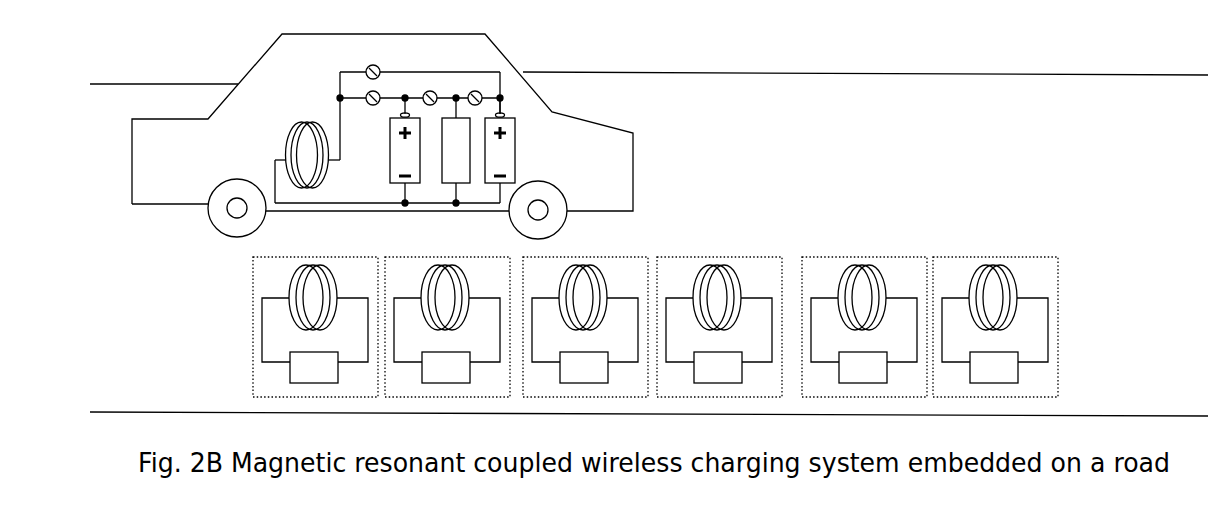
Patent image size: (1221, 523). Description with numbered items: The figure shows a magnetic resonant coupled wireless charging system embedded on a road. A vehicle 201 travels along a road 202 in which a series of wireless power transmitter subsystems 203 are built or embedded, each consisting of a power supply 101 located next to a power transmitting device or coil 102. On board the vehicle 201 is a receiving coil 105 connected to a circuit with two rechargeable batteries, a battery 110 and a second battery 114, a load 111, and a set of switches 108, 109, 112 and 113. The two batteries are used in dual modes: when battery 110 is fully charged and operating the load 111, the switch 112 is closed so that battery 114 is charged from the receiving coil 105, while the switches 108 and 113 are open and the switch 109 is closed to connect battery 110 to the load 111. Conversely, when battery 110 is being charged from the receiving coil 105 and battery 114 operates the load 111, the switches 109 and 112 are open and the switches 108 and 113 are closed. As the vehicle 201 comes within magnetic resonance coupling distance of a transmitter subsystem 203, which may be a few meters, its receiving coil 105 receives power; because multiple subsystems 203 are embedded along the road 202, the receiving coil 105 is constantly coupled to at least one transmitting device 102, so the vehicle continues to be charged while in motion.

The power supply 101 is at (303, 360).
The power transmitting device 102 is at (337, 279).
The receiving coil 105 is at (308, 125).
The switch 108 is at (363, 92).
The switch 109 is at (430, 91).
The battery 110 is at (392, 162).
The load 111 is at (445, 170).
The switch 112 is at (363, 47).
The switch 113 is at (476, 91).
The battery 114 is at (512, 145).
The vehicle 201 is at (193, 130).
The road 202 is at (945, 87).
The wireless power transmitter subsystem 203 is at (655, 312).